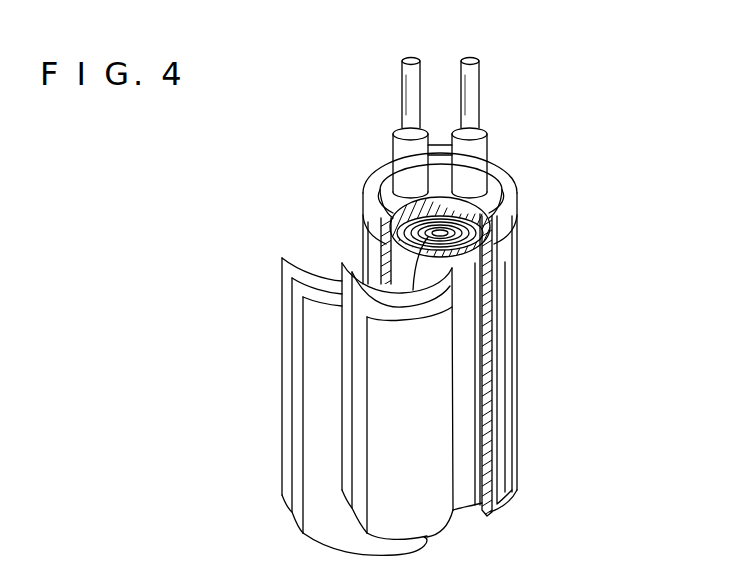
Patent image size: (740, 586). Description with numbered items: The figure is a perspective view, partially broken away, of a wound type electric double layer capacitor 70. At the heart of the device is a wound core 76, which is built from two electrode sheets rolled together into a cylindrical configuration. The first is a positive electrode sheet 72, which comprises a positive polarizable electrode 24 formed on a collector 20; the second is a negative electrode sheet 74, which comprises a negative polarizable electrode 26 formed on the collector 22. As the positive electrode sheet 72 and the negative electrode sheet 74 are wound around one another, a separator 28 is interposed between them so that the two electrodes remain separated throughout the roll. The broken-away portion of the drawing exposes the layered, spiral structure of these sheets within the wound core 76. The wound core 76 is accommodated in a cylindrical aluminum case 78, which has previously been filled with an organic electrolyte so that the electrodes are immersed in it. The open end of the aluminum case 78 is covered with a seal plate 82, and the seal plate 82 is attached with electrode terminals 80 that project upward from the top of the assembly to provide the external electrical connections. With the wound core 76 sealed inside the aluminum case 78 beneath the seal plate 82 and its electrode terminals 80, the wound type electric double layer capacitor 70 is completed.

The wound type electric double layer capacitor 70 is at (536, 153).
The positive electrode sheet 72 is at (596, 326).
The negative electrode sheet 74 is at (223, 338).
The wound core 76 is at (465, 514).
The cylindrical aluminum case 78 is at (507, 266).
The electrode terminals 80 is at (469, 59).
The seal plate 82 is at (372, 186).
The collector 20 is at (366, 346).
The collector 22 is at (298, 345).
The positive polarizable electrode 24 is at (405, 399).
The negative polarizable electrode 26 is at (321, 392).
The separator 28 is at (343, 275).